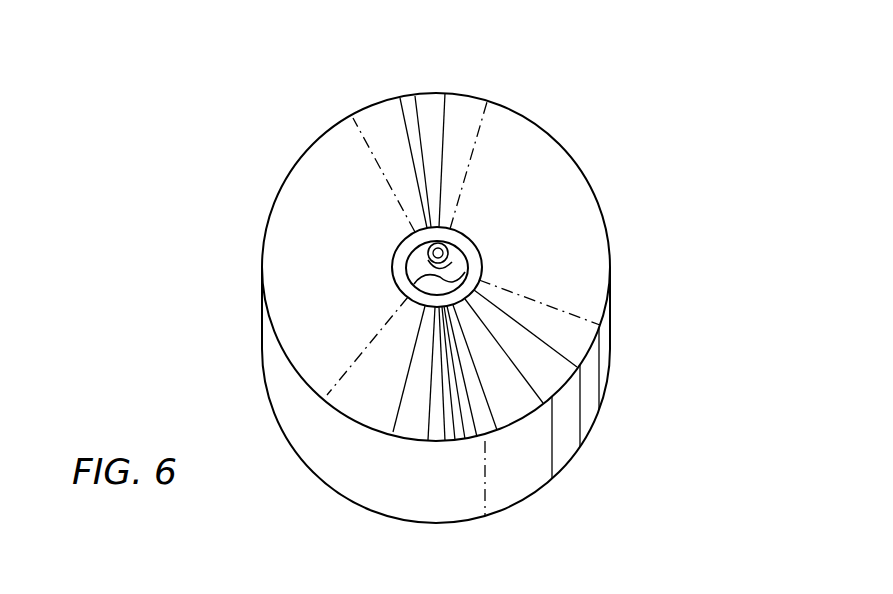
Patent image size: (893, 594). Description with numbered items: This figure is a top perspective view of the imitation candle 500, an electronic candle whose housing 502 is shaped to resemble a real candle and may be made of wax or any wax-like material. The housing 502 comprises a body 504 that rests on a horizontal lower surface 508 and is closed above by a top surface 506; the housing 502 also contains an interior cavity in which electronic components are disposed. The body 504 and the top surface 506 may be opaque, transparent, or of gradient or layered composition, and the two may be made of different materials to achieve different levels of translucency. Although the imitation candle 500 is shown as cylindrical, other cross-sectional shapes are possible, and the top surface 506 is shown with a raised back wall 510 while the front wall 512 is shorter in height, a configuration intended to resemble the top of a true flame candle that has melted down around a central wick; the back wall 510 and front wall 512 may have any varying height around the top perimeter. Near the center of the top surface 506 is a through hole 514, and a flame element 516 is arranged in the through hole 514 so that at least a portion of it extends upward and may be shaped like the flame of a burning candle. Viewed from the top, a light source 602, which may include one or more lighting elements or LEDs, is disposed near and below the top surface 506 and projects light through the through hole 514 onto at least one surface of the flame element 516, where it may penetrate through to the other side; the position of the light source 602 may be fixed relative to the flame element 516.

The imitation candle 500 is at (296, 125).
The housing 502 is at (264, 351).
The body 504 is at (299, 418).
The top surface 506 is at (311, 185).
The horizontal lower surface 508 is at (325, 481).
The raised back wall 510 is at (438, 442).
The front wall 512 is at (440, 93).
The through hole 514 is at (461, 268).
The flame element 516 is at (433, 288).
The light source 602 is at (438, 252).